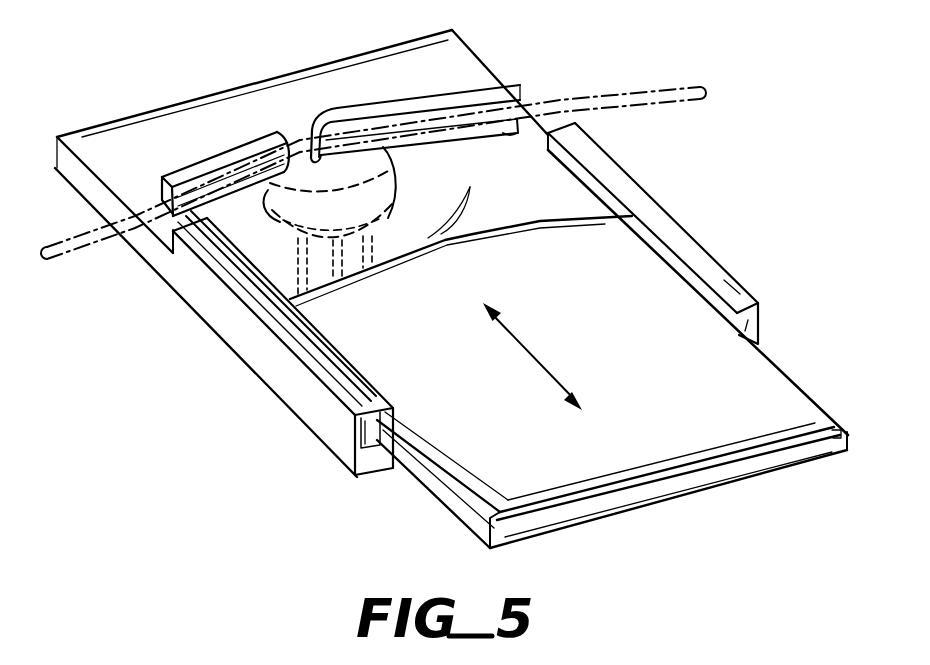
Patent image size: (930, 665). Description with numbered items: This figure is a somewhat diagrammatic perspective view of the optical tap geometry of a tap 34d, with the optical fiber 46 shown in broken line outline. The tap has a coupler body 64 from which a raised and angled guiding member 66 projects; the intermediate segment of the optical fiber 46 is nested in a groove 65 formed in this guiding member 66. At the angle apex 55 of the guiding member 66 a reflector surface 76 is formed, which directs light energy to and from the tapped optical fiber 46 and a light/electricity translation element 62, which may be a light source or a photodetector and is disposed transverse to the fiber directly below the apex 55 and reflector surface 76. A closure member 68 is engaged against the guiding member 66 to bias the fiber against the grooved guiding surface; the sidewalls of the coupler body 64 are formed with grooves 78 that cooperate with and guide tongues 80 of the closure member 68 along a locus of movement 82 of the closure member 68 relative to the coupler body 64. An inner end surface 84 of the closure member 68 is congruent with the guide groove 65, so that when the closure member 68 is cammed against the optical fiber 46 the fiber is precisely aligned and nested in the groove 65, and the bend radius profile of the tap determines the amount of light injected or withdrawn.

The tap 34d is at (172, 508).
The optical fiber 46 is at (88, 250).
The angle apex 55 is at (283, 122).
The light/electricity translation element 62 is at (265, 237).
The coupler body 64 is at (255, 342).
The groove 65 is at (497, 140).
The guiding member 66 is at (487, 97).
The closure member 68 is at (637, 433).
The reflector surface 76 is at (317, 115).
The grooves 78 is at (752, 305).
The tongues 80 is at (452, 486).
The locus of movement 82 is at (548, 366).
The inner end surface 84 is at (468, 202).